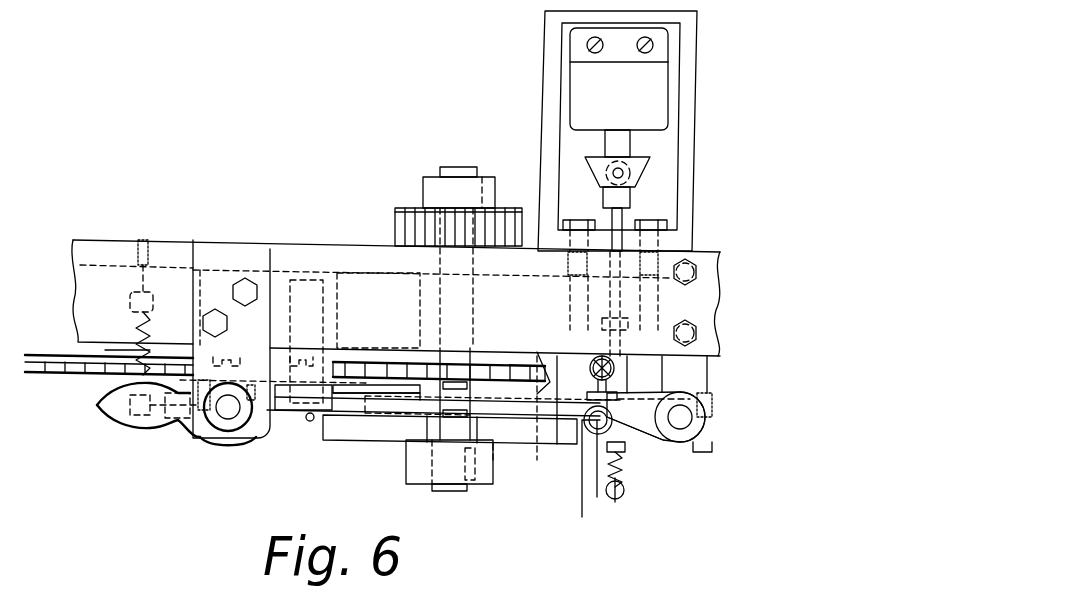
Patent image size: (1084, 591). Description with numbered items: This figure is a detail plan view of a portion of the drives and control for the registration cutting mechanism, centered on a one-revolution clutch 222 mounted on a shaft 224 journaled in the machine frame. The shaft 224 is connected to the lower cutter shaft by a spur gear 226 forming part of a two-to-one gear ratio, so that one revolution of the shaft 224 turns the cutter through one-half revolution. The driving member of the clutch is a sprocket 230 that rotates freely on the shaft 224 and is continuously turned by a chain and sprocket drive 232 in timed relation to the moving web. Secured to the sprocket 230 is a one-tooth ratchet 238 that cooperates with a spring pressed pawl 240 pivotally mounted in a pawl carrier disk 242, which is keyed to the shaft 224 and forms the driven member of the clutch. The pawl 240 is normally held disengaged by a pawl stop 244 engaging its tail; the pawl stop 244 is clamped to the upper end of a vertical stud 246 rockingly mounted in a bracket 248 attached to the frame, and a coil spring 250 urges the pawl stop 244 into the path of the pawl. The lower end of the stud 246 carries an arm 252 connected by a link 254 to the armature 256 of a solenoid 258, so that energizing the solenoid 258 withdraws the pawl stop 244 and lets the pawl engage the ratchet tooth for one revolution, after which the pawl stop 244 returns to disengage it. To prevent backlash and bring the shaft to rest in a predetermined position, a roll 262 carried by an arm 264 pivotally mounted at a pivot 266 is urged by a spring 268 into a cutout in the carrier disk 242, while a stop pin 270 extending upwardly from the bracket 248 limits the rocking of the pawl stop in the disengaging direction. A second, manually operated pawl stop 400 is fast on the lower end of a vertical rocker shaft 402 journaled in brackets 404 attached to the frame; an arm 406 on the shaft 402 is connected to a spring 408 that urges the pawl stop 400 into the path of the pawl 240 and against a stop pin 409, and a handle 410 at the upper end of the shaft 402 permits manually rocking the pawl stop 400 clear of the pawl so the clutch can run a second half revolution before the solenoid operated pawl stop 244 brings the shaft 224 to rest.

The one-revolution clutch 222 is at (395, 450).
The one-revolution shaft 224 is at (443, 165).
The spur gear 226 is at (400, 207).
The sprocket 230 is at (383, 370).
The chain and sprocket drive 232 is at (40, 353).
The one-tooth ratchet 238 is at (388, 410).
The spring pressed pawl 240 is at (534, 444).
The pawl carrier disk 242 is at (515, 445).
The pawl stop 244 is at (588, 482).
The vertical stud 246 is at (693, 410).
The bracket 248 is at (702, 377).
The coil spring 250 is at (623, 453).
The arm 252 is at (657, 447).
The link 254 is at (622, 218).
The armature 256 is at (628, 147).
The solenoid 258 is at (617, 178).
The roll 262 is at (477, 427).
The arm 264 is at (548, 385).
The pivot 266 is at (343, 294).
The spring 268 is at (590, 365).
The stop pin 270 is at (598, 497).
The second pawl stop 400 is at (278, 420).
The vertical rocker shaft 402 is at (228, 419).
The brackets 404 is at (195, 240).
The arm 406 is at (177, 428).
The spring 408 is at (110, 350).
The stop pin 409 is at (310, 421).
The handle 410 is at (127, 425).